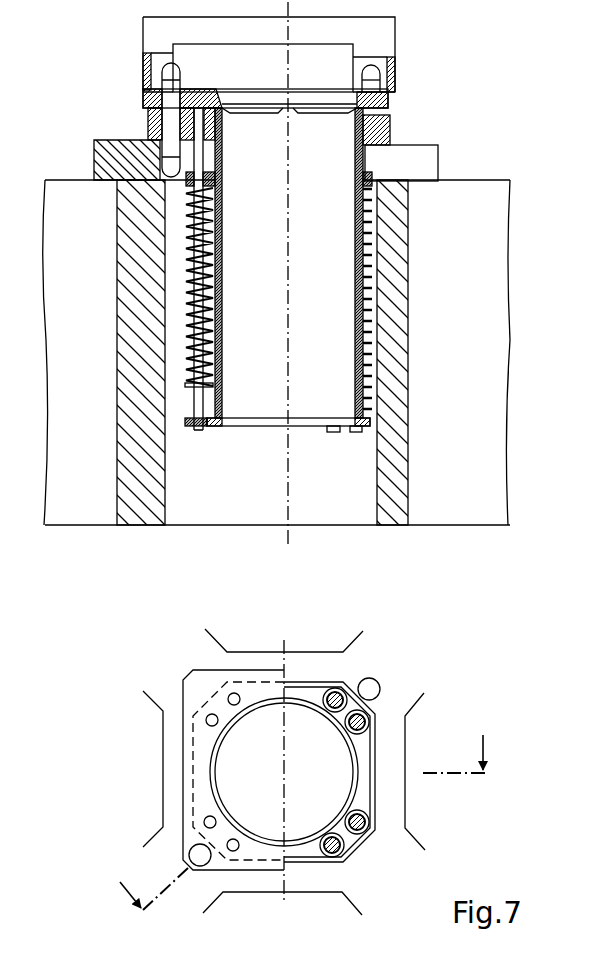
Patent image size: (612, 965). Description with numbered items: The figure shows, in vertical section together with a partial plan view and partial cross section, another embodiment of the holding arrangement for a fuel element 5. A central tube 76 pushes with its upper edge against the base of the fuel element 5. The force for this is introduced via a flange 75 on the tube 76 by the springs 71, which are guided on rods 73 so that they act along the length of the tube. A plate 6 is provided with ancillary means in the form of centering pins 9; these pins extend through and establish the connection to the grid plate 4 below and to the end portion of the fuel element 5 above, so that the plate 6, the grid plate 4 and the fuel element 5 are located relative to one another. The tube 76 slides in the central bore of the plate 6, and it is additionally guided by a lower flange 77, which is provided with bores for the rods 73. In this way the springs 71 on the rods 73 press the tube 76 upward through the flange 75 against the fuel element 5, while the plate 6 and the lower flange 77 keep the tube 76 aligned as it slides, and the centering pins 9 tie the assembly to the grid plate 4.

The grid plate 4 is at (485, 492).
The fuel element 5 is at (385, 30).
The plate 6 is at (393, 128).
The centering pins 9 is at (168, 97).
The springs 71 is at (206, 305).
The rods 73 is at (198, 333).
The flange 75 is at (222, 185).
The central tube 76 is at (222, 262).
The lower flange 77 is at (368, 430).